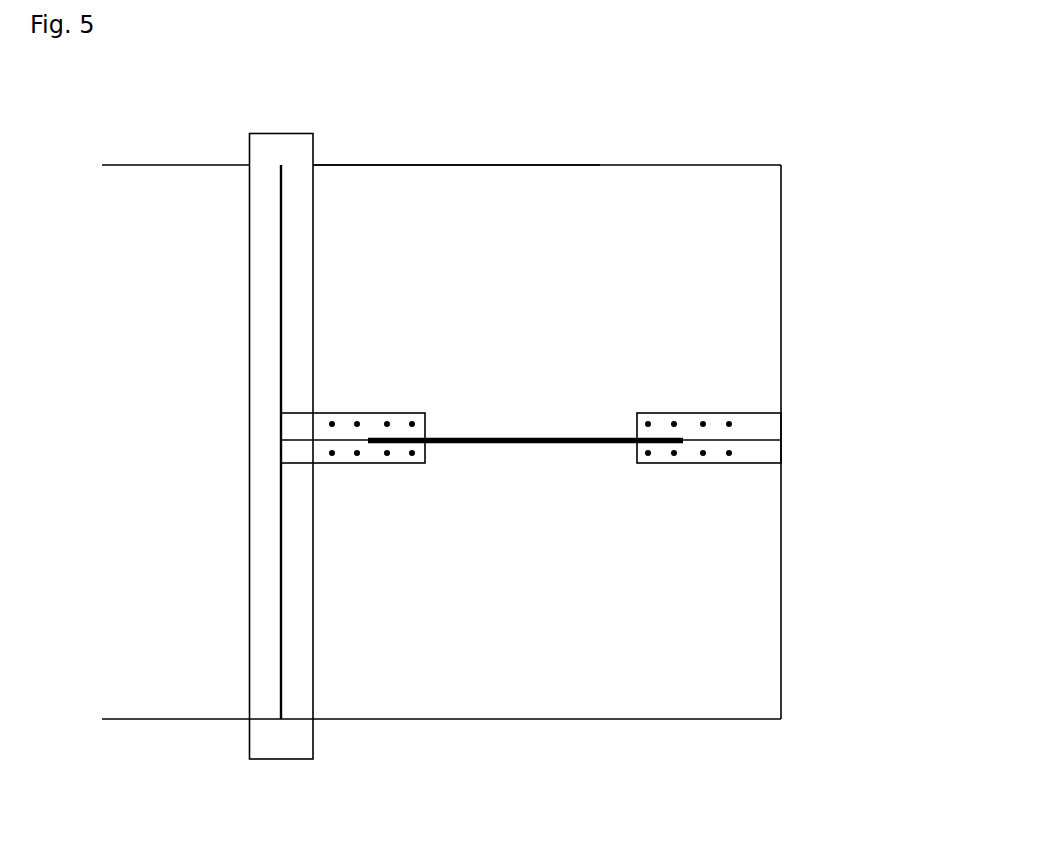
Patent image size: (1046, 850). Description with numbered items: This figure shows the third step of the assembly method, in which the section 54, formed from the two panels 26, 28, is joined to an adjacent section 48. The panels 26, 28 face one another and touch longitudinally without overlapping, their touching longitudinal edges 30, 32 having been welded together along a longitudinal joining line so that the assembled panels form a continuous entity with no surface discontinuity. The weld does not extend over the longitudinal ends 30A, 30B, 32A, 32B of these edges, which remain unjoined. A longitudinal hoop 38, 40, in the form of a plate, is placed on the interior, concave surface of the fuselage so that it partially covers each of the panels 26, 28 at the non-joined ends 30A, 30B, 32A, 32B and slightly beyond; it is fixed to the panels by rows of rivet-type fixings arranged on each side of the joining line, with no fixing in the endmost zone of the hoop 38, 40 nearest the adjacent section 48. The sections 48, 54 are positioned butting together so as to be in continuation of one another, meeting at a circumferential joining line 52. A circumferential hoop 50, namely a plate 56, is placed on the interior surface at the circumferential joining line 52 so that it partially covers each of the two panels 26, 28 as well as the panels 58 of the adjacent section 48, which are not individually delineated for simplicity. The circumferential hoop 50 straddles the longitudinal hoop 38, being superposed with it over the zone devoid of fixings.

The panel 26 is at (733, 248).
The panel 28 is at (730, 585).
The longitudinal edge 30 is at (468, 438).
The longitudinal end of edge 30A is at (300, 440).
The longitudinal end of edge 30B is at (730, 440).
The longitudinal edge 32 is at (558, 445).
The longitudinal end of edge 32A is at (309, 445).
The longitudinal end of edge 32B is at (750, 443).
The longitudinal hoop 38 is at (370, 425).
The longitudinal hoop 40 is at (685, 425).
The adjacent section 48 is at (122, 190).
The circumferential hoop 50 is at (270, 152).
The circumferential joining line 52 is at (283, 385).
The section 54 is at (605, 200).
The plate 56 is at (268, 728).
The panels of the adjacent section 58 is at (143, 683).